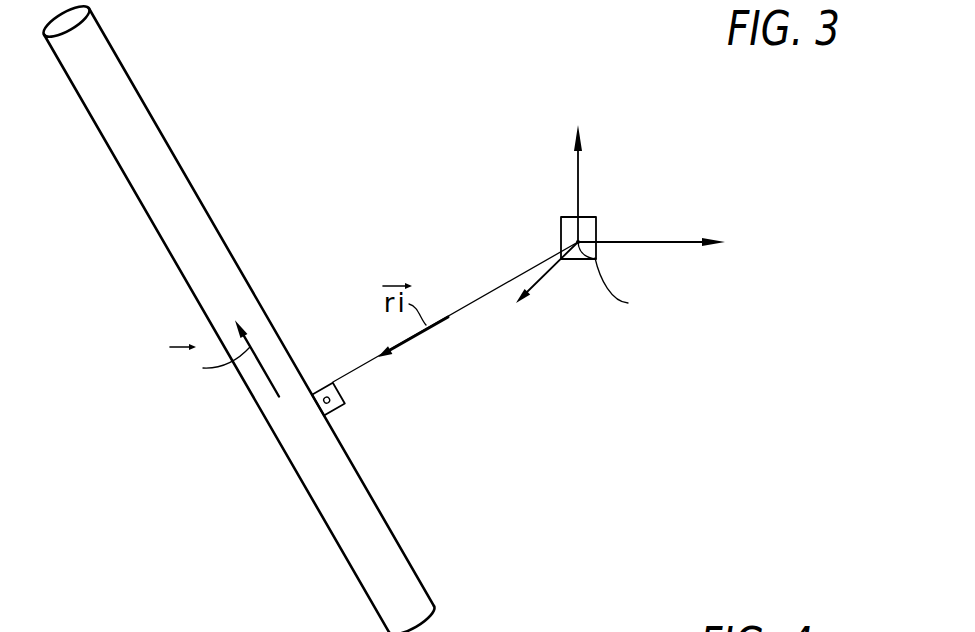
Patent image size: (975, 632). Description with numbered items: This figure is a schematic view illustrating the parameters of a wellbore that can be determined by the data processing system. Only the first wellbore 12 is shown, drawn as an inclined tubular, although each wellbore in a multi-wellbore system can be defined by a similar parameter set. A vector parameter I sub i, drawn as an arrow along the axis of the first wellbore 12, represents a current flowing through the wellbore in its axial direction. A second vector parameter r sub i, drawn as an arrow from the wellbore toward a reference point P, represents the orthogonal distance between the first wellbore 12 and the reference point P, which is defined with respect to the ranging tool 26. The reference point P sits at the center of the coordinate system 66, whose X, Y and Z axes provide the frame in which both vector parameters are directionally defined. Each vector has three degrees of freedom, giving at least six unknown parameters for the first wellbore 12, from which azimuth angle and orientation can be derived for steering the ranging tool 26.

The first wellbore 12 is at (110, 88).
The ranging tool 26 is at (589, 217).
The coordinate system 66 is at (684, 237).